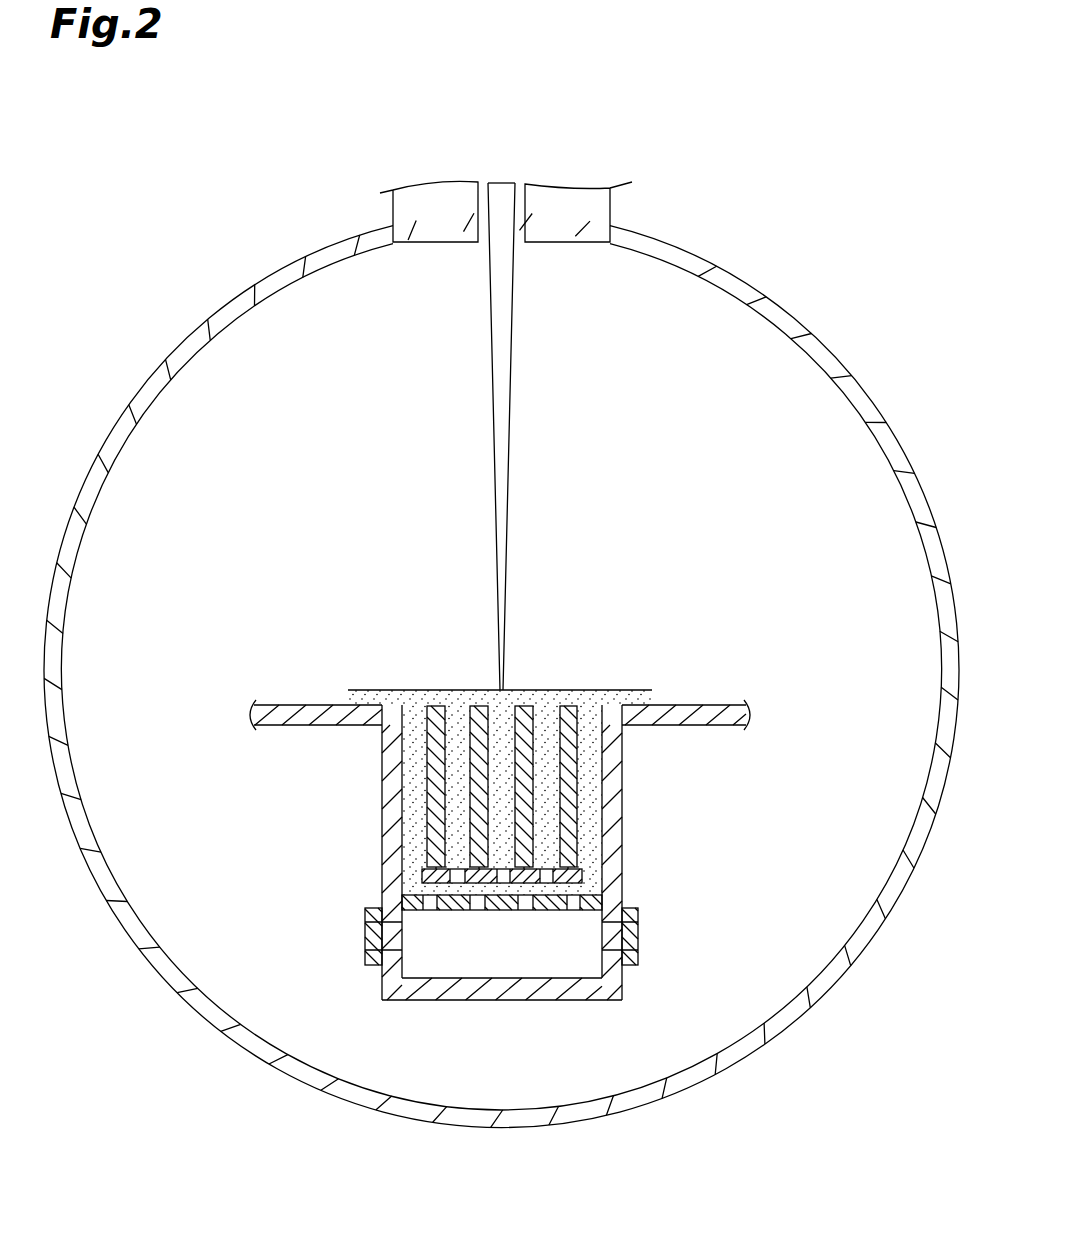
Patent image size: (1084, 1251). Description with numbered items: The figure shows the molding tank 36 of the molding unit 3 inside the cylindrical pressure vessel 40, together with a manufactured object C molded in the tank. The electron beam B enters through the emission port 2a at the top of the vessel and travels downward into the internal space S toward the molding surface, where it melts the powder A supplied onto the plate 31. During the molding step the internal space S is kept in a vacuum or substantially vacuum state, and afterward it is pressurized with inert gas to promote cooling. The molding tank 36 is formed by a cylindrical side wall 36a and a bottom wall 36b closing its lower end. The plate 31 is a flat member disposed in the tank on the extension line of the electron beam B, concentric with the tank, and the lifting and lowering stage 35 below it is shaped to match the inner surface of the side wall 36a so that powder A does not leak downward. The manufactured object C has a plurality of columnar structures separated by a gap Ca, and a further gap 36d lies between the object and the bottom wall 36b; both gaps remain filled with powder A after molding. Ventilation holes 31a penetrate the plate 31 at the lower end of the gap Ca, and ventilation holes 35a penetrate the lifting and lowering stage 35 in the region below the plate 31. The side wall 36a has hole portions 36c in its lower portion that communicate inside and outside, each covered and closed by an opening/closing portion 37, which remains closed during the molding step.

The pressure vessel 40 is at (147, 394).
The emission port 2a is at (512, 233).
The electron beam B is at (512, 392).
The internal space S is at (370, 424).
The molding unit 3 is at (759, 831).
The molding tank 36 is at (500, 892).
The side wall 36a is at (386, 812).
The bottom wall 36b is at (523, 1003).
The hole portions 36c is at (370, 945).
The gap 36d is at (405, 768).
The opening/closing portions 37 is at (363, 913).
The powder A is at (470, 705).
The manufactured object C is at (568, 700).
The gap Ca is at (460, 760).
The plate 31 is at (415, 873).
The ventilation holes 31a is at (580, 866).
The lifting and lowering stage 35 is at (507, 912).
The ventilation holes 35a is at (477, 910).